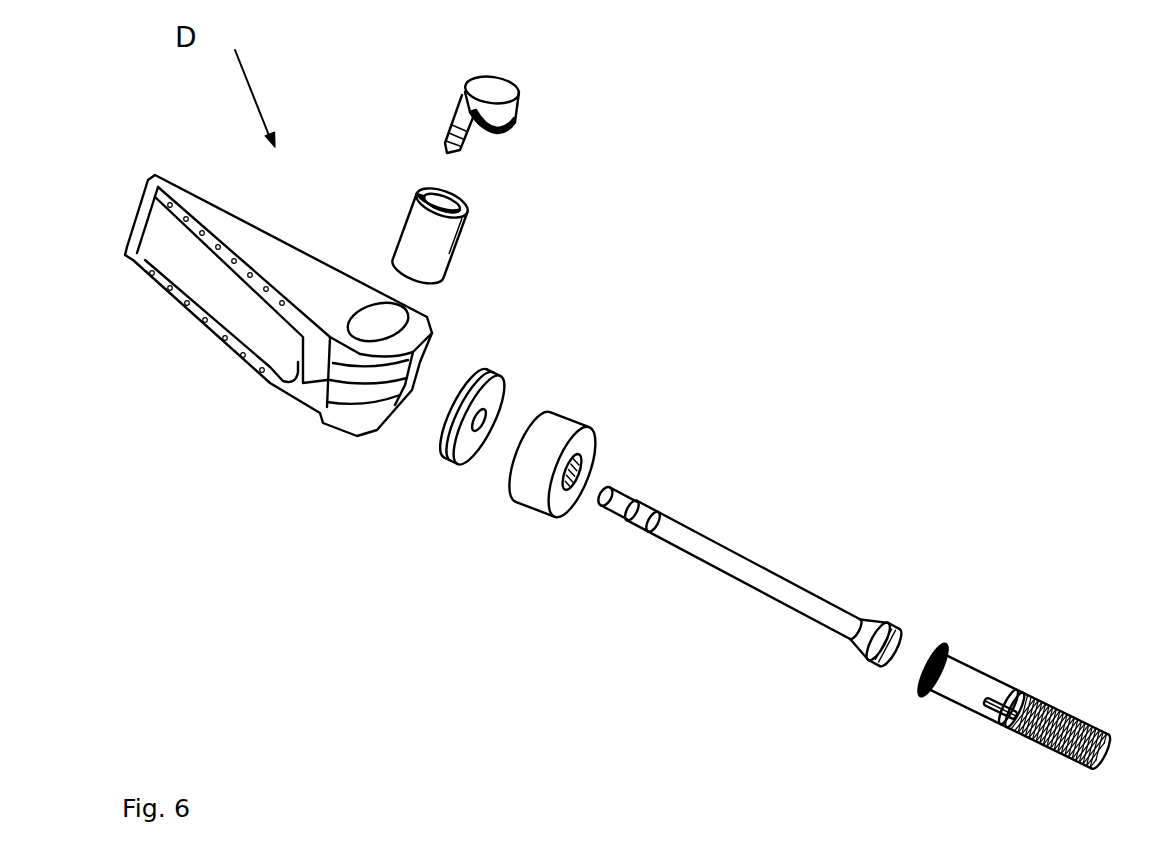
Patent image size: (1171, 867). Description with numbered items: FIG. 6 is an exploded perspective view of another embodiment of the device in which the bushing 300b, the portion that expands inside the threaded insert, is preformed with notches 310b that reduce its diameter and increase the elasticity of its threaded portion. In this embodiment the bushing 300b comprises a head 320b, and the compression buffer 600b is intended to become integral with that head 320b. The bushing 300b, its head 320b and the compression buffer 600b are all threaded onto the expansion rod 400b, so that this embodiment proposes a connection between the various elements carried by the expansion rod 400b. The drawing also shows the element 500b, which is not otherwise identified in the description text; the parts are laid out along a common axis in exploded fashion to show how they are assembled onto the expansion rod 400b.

The lever body 500b is at (247, 245).
The compression buffer 600b is at (553, 427).
The expansion rod 400b is at (705, 550).
The bushing 300b is at (960, 697).
The head 320b is at (945, 643).
The notches 310b is at (1013, 692).